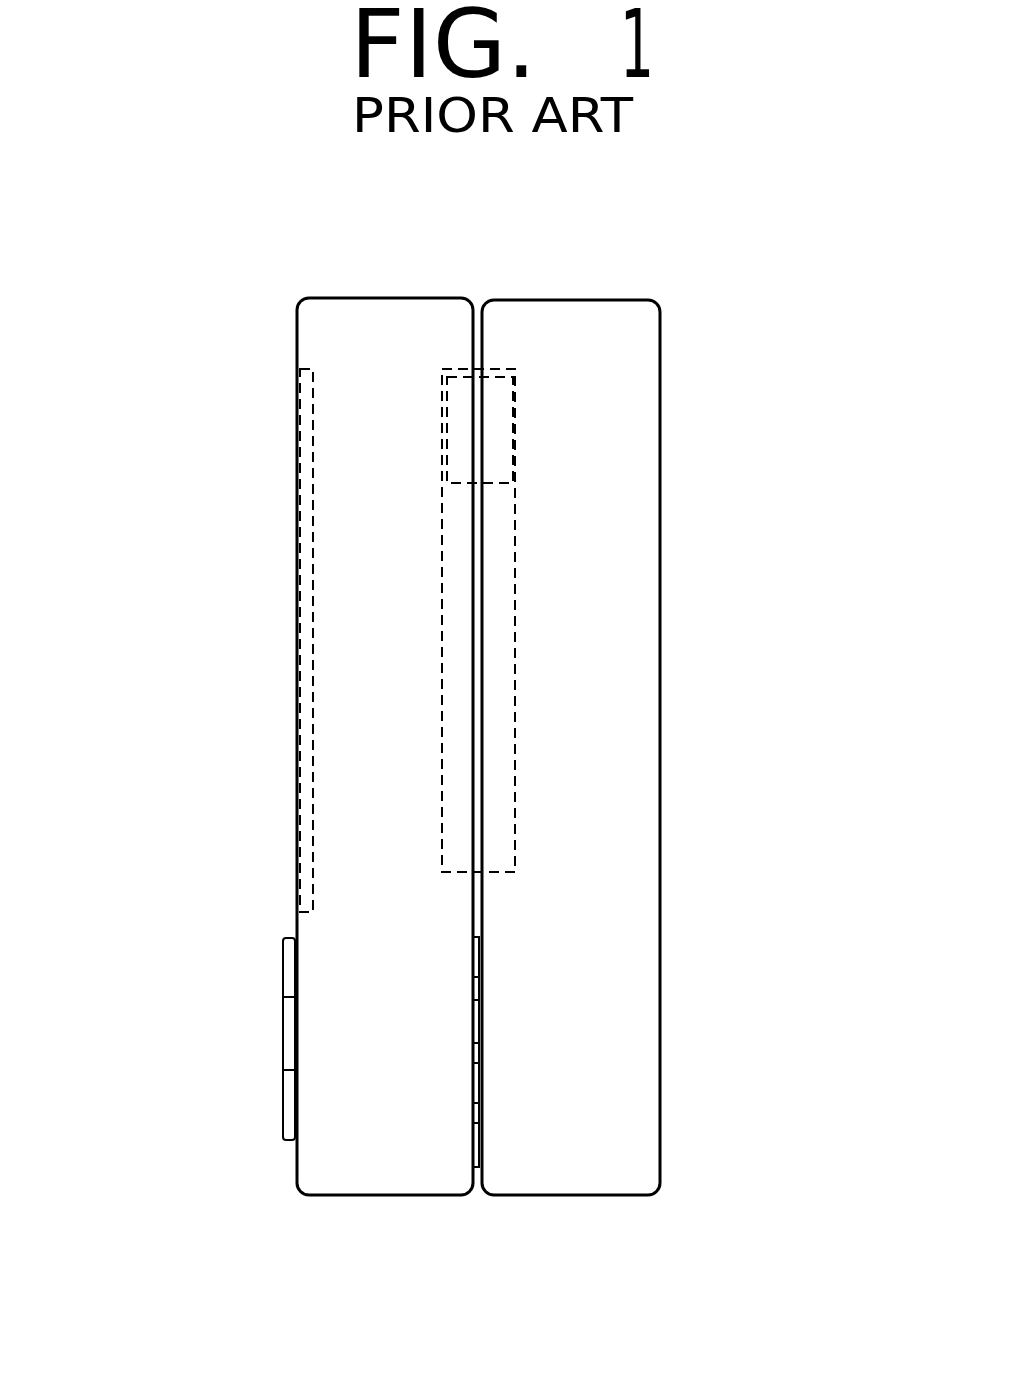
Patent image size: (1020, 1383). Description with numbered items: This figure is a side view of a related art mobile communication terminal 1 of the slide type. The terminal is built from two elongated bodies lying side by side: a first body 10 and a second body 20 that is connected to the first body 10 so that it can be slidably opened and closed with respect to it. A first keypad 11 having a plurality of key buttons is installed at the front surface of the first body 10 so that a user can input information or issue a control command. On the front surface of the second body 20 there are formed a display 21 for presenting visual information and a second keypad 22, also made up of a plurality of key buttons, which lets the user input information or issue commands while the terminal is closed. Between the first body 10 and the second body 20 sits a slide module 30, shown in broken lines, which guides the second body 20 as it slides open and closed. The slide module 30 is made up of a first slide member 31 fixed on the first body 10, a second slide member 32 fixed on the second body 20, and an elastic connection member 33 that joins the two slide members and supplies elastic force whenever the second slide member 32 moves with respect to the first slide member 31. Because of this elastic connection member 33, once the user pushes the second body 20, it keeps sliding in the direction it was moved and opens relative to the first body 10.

The mobile communication terminal 1 is at (168, 318).
The first body 10 is at (588, 1155).
The first keypad 11 is at (470, 1142).
The second body 20 is at (357, 1155).
The display 21 is at (303, 656).
The second keypad 22 is at (283, 1020).
The slide module 30 is at (671, 620).
The first slide member 31 is at (645, 650).
The second slide member 32 is at (457, 518).
The elastic connection member 33 is at (503, 422).